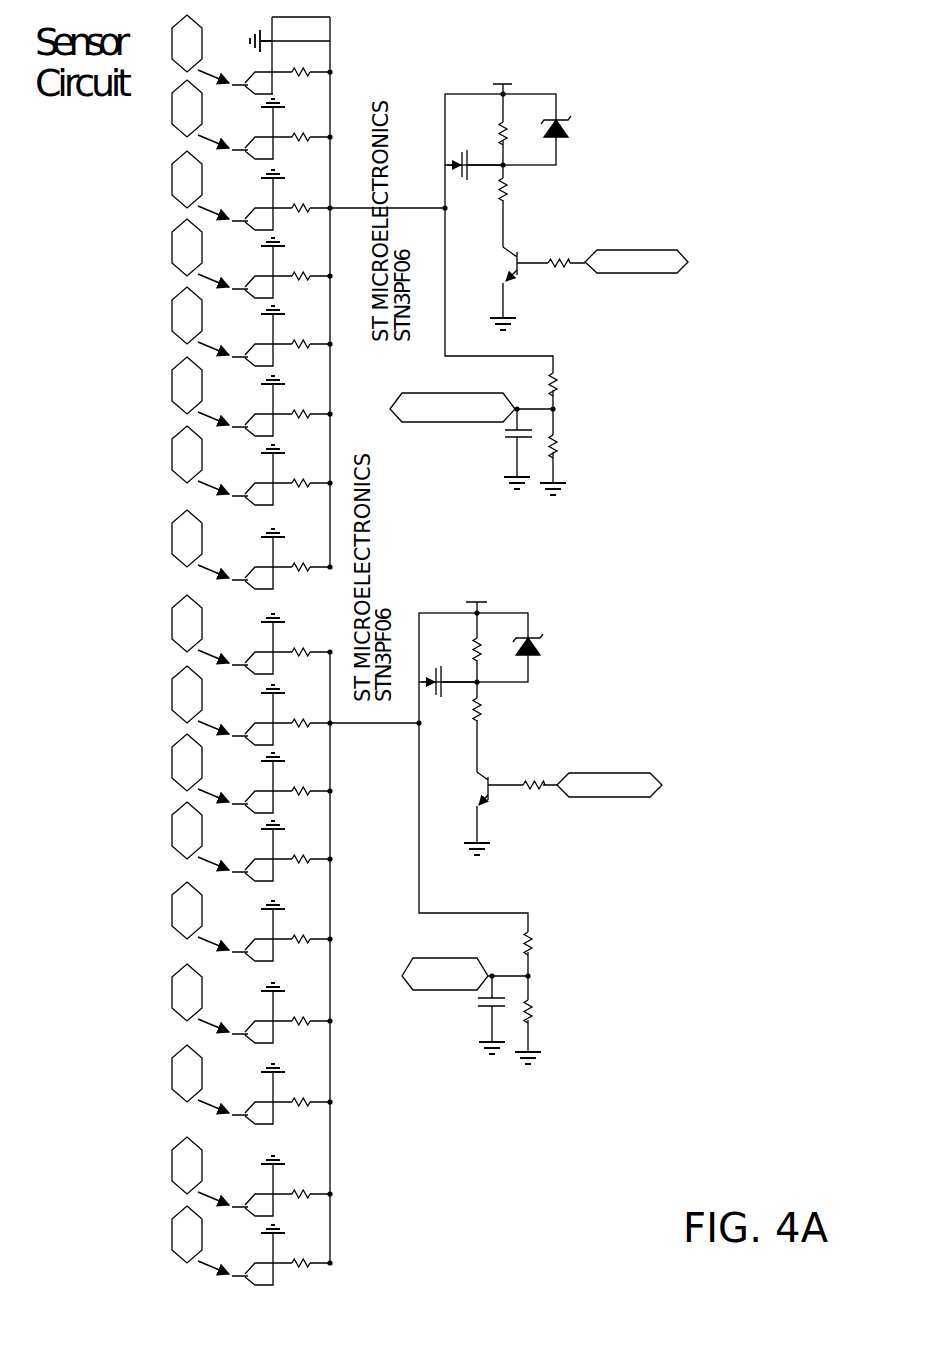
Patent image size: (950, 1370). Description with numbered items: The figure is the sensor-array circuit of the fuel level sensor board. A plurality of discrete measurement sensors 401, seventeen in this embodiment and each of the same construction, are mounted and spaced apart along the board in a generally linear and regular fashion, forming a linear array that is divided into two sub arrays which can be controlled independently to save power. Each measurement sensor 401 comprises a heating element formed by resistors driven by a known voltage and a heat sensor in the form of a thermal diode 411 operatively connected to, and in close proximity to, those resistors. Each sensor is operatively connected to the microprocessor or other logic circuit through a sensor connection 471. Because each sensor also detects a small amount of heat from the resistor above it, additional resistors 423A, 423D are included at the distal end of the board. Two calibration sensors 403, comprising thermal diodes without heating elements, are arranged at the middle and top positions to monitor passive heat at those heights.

The measurement sensor 401 is at (155, 1266).
The thermal diode 411 is at (257, 1280).
The sensor connection 471 is at (185, 1208).
The additional resistor 423A is at (330, 72).
The resistor R15 (140 ohm) 423D is at (330, 35).
The calibration sensor 403 is at (705, 195).